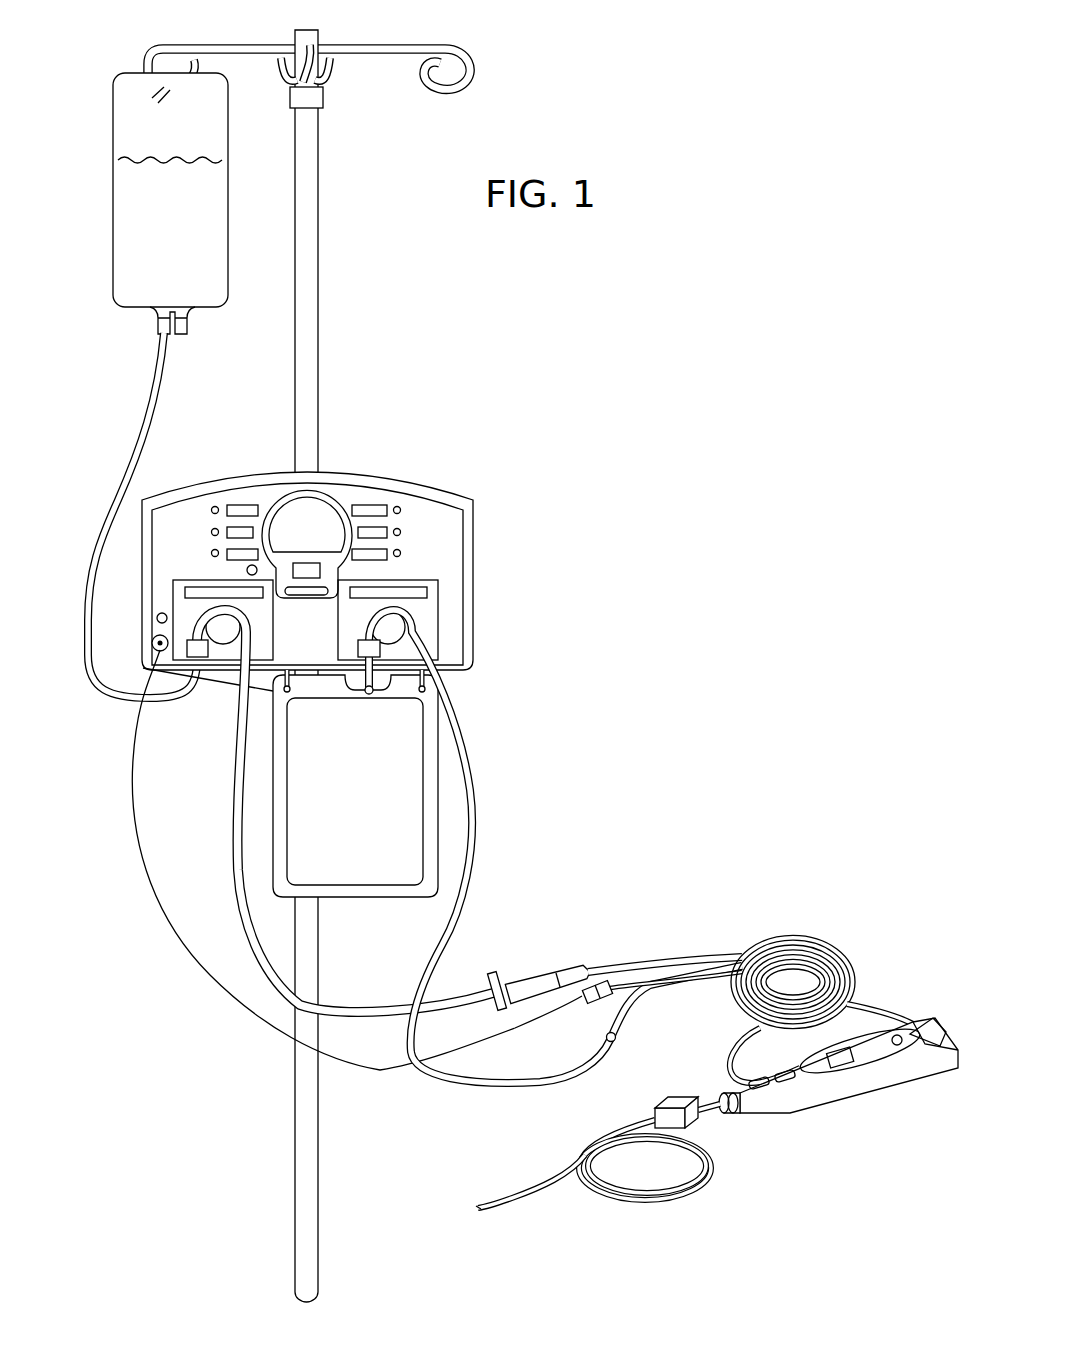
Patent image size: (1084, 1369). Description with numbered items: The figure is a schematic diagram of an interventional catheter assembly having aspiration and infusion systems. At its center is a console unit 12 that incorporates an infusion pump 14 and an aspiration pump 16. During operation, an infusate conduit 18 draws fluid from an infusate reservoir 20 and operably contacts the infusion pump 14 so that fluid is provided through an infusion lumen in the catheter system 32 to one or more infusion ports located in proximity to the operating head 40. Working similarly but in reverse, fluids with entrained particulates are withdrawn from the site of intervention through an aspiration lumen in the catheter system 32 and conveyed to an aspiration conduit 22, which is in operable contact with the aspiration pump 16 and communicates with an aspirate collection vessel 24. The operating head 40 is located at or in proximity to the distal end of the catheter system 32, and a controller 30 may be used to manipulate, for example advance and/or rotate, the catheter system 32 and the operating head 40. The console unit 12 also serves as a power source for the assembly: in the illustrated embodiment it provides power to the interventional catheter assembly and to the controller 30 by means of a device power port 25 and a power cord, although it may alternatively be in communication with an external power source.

The console unit 12 is at (287, 544).
The infusion pump 14 is at (190, 610).
The aspiration pump 16 is at (420, 616).
The infusate conduit 18 is at (232, 862).
The infusate reservoir 20 is at (183, 228).
The aspiration conduit 22 is at (474, 873).
The aspirate collection vessel 24 is at (376, 815).
The device power port 25 is at (150, 642).
The controller 30 is at (847, 1093).
The catheter system 32 is at (673, 1199).
The operating head 40 is at (472, 1222).